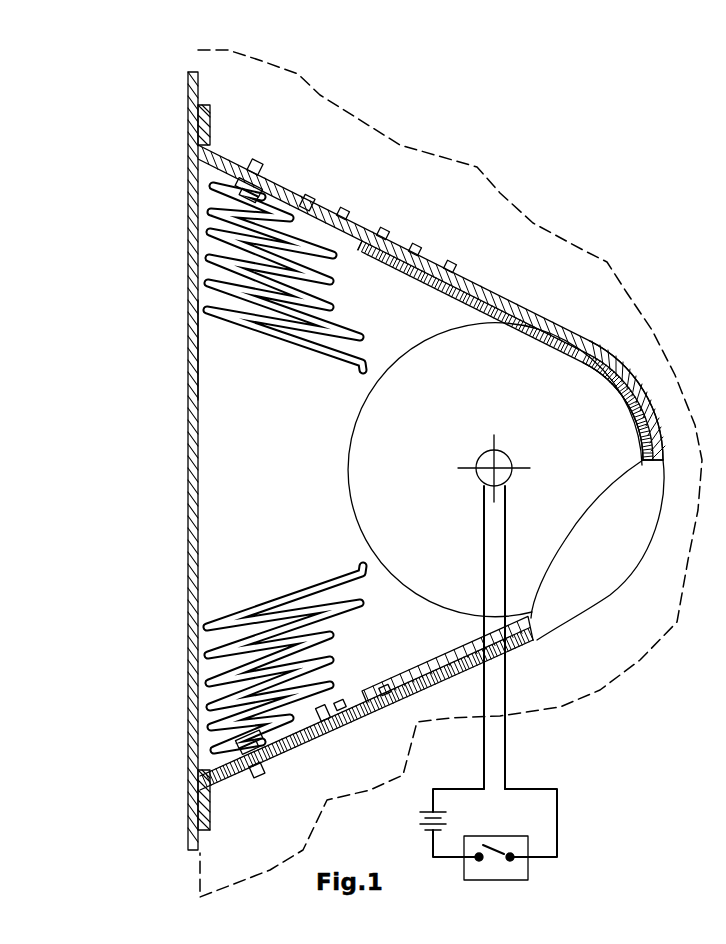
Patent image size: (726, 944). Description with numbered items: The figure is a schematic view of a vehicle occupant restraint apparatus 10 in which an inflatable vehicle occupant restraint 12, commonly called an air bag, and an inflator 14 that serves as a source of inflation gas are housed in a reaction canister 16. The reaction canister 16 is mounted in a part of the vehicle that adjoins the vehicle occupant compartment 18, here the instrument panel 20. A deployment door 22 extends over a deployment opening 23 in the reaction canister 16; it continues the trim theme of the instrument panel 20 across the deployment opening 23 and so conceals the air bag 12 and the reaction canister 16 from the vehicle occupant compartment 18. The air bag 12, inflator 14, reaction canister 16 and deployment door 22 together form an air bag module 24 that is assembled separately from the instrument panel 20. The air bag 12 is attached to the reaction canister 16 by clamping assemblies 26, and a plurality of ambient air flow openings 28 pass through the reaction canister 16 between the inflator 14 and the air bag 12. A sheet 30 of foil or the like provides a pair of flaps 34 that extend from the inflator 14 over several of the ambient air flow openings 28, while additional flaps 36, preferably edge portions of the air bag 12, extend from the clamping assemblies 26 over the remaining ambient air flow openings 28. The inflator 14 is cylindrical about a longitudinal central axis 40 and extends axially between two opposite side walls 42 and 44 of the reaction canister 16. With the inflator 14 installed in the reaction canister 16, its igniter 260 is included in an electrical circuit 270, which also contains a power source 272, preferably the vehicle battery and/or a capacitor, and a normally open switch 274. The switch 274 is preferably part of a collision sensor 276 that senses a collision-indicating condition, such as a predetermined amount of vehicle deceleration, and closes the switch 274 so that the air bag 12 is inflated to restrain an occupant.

The vehicle occupant restraint apparatus 10 is at (150, 124).
The inflatable vehicle occupant restraint 12 is at (250, 238).
The inflator 14 is at (340, 442).
The reaction canister 16 is at (548, 298).
The vehicle occupant compartment 18 is at (165, 386).
The instrument panel 20 is at (197, 58).
The deployment door 22 is at (188, 148).
The deployment opening 23 is at (186, 346).
The air bag module 24 is at (475, 243).
The clamping assemblies 26 is at (251, 158).
The ambient air flow openings 28 is at (386, 236).
The sheet 30 is at (446, 303).
The flaps 34 is at (366, 262).
The additional flaps 36 is at (308, 200).
The longitudinal central axis 40 is at (512, 450).
The side wall 42 is at (225, 517).
The side wall 44 is at (596, 516).
The igniter 260 is at (478, 460).
The electrical circuit 270 is at (528, 782).
The power source 272 is at (430, 814).
The normally open switch 274 is at (502, 848).
The collision sensor 276 is at (496, 880).